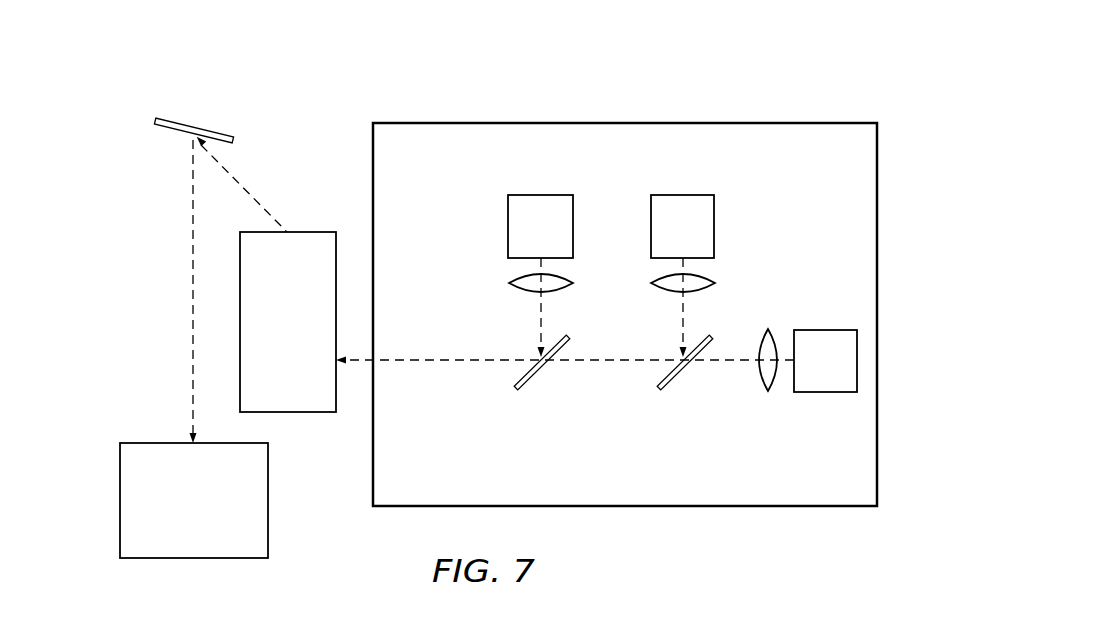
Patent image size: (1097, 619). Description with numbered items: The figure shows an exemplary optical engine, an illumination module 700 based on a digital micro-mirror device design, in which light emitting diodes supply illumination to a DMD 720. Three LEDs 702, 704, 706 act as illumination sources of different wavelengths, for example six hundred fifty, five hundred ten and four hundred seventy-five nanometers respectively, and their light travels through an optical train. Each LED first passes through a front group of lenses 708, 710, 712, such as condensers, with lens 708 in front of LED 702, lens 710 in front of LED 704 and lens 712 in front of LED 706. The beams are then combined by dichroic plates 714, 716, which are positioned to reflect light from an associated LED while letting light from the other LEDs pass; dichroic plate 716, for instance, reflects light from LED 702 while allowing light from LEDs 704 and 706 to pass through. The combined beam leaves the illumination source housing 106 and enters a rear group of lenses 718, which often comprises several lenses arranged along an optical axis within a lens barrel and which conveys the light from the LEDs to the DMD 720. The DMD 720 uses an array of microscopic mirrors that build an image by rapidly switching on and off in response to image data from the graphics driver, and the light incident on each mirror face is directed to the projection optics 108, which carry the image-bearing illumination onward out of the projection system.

The illumination module 700 is at (129, 66).
The DMD 720 is at (209, 128).
The rear group of lenses 718 is at (295, 412).
The projection optics 108 is at (119, 501).
The illumination system 106 is at (735, 511).
The LED 702 is at (530, 195).
The LED 704 is at (692, 195).
The LED 706 is at (823, 330).
The front group lens 708 is at (510, 283).
The front group lens 710 is at (714, 283).
The front group lens 712 is at (767, 390).
The dichroic plate 714 is at (677, 380).
The dichroic plate 716 is at (533, 380).